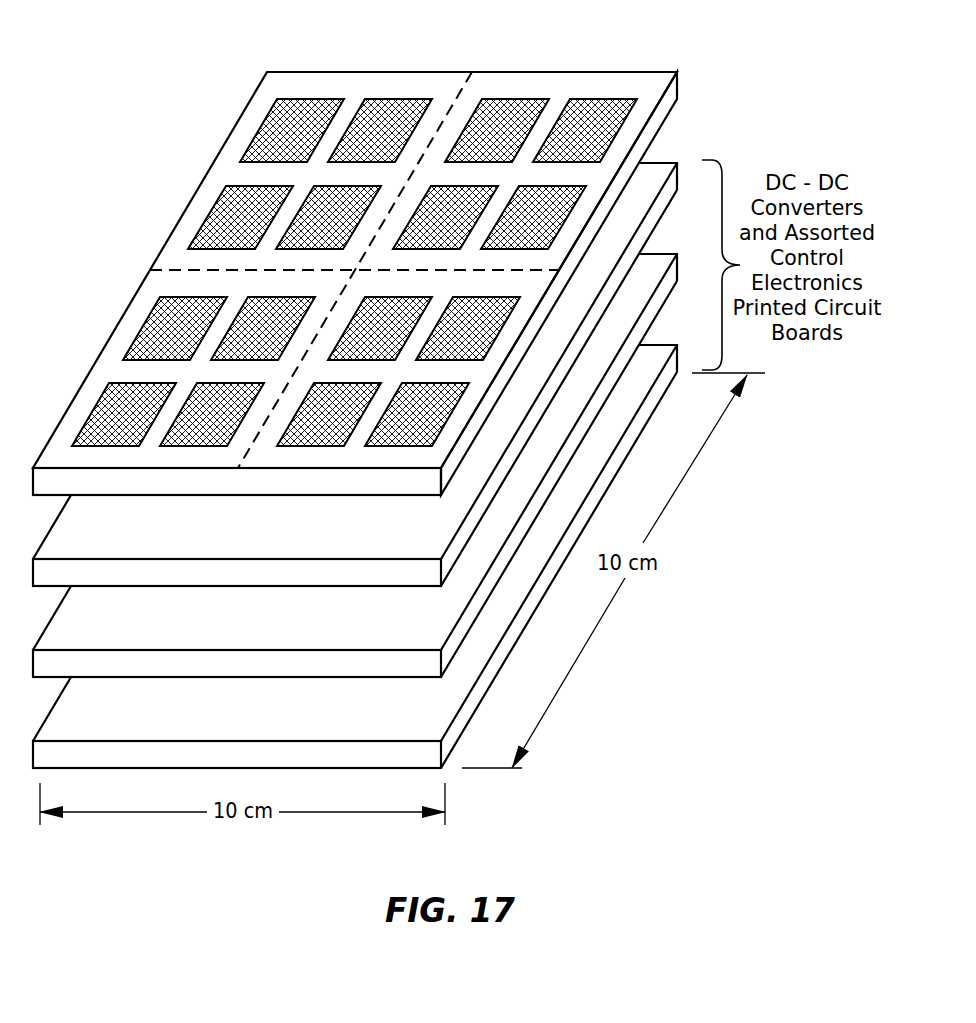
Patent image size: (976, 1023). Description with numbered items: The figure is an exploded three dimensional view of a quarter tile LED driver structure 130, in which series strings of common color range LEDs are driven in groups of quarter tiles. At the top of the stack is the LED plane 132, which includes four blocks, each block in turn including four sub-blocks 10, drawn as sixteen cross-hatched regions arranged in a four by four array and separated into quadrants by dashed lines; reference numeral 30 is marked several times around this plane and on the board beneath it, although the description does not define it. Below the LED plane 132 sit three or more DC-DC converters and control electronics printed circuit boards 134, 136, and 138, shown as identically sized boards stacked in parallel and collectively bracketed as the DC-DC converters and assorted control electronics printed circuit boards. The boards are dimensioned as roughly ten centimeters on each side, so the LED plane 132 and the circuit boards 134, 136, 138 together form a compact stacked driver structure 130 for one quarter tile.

The quarter tile LED driver structure 130 is at (309, 43).
The LED plane 132 is at (55, 442).
The DC-DC converter and control electronics printed circuit board 134 is at (109, 544).
The DC-DC converter and control electronics printed circuit board 136 is at (111, 637).
The DC-DC converter and control electronics printed circuit board 138 is at (114, 729).
The board / tile 30 is at (603, 78).
The sub-block 10 is at (372, 135).